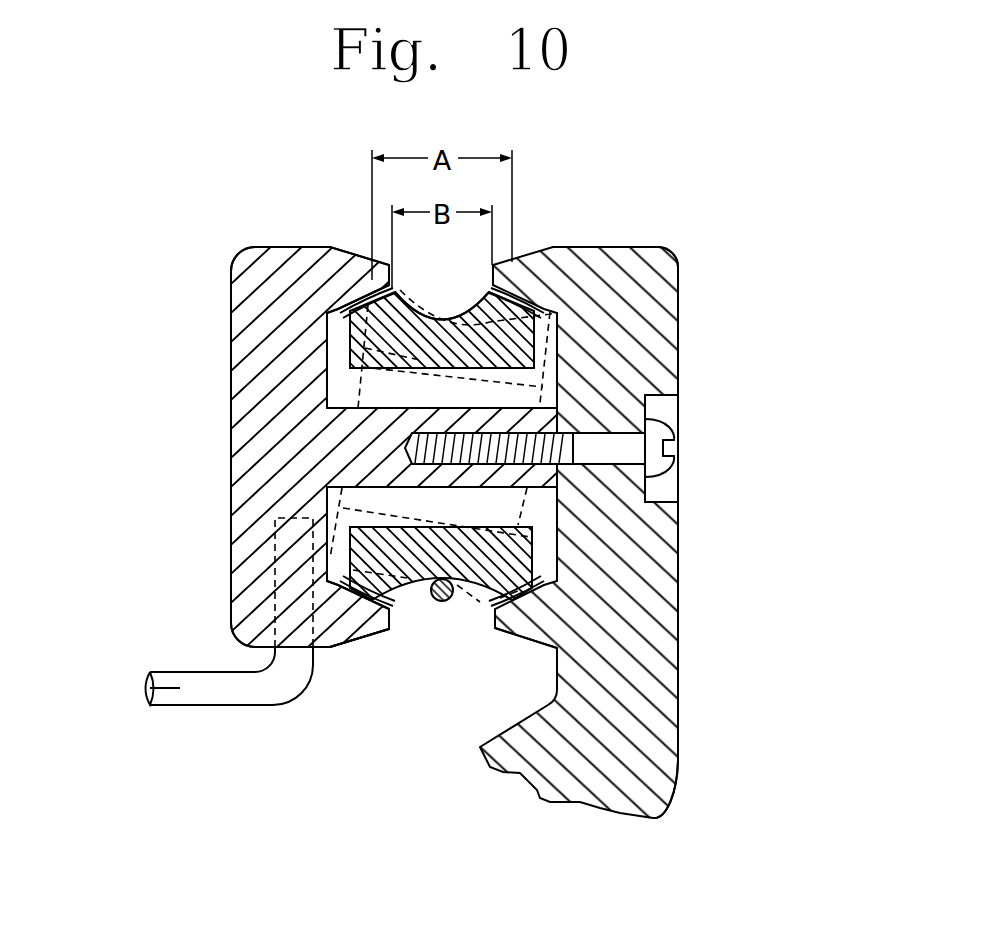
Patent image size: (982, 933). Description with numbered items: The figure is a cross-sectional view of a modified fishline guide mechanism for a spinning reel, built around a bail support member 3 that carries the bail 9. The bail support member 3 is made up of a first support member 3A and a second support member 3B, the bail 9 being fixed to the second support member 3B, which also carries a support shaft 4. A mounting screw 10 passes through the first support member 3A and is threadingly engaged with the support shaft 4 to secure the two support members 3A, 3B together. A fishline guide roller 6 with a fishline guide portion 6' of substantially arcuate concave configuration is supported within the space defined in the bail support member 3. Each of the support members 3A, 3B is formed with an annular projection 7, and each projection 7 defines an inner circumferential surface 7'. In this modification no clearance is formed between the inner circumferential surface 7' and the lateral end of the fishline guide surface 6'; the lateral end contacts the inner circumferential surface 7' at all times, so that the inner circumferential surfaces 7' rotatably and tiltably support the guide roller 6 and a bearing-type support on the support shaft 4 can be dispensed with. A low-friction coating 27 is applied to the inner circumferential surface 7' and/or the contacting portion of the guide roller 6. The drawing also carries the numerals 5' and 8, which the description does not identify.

The bail support member 3 is at (700, 237).
The first support member 3A is at (668, 302).
The second support member 3B is at (235, 485).
The support shaft 4 is at (557, 418).
The bearing bush in tilted position 5' is at (579, 446).
The fishline guide roller 6 is at (301, 330).
The fishline guide portion 6' is at (442, 285).
The annular projection 7 is at (443, 656).
The inner circumferential surface 7' is at (588, 616).
The ball 8 is at (450, 603).
The bail 9 is at (150, 690).
The mounting screw 10 is at (678, 468).
The low-friction coating 27 is at (358, 297).